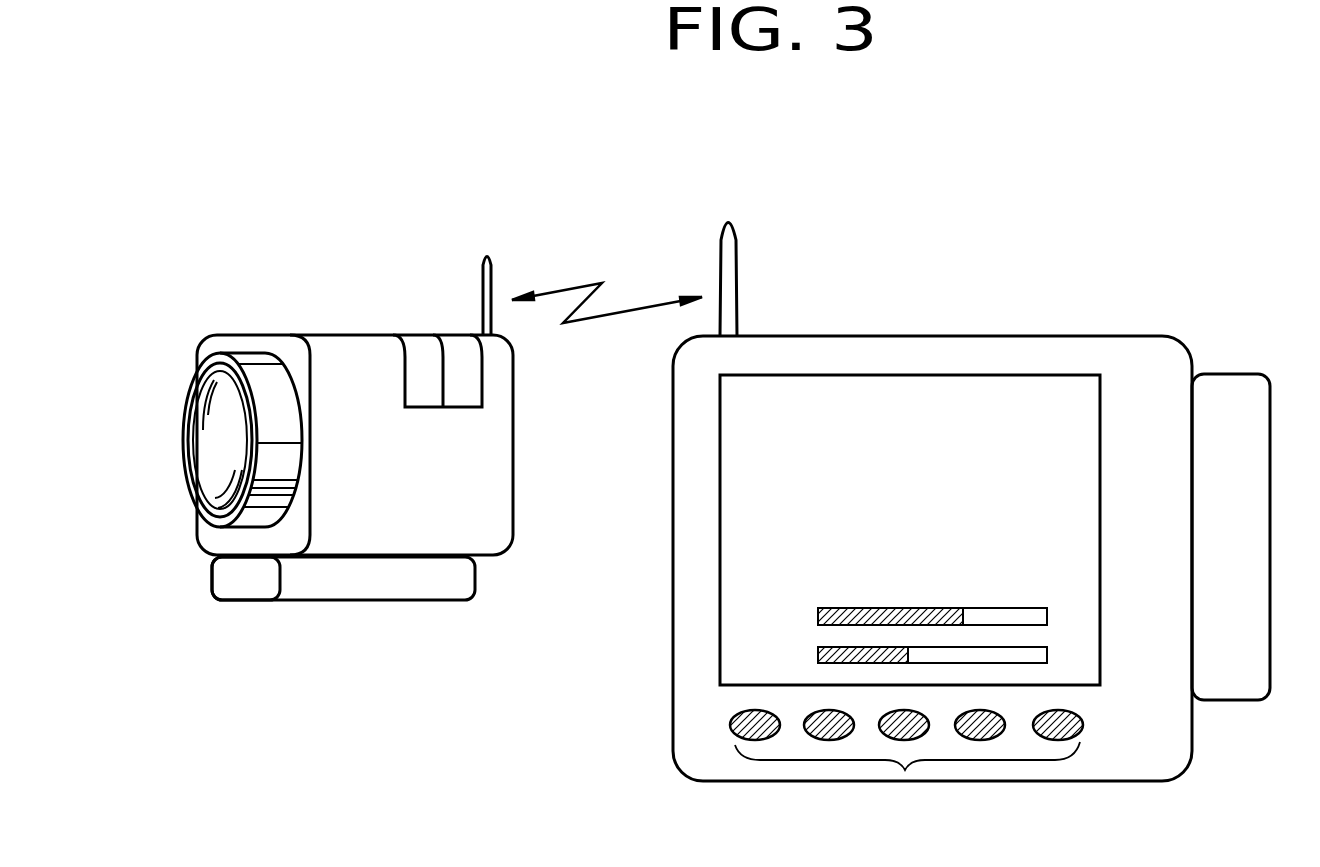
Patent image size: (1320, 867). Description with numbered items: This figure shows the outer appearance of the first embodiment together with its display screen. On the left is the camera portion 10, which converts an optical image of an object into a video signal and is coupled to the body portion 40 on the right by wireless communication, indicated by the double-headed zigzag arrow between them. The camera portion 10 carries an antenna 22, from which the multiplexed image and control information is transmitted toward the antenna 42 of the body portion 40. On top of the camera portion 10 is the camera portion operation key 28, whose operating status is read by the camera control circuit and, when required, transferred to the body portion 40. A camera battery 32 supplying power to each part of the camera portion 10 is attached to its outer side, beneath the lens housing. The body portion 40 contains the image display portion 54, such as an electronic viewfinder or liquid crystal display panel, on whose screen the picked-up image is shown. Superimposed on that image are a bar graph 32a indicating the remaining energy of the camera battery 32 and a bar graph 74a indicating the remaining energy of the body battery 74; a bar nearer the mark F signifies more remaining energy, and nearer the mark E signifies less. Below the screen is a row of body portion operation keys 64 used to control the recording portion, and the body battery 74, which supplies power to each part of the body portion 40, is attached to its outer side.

The camera portion 10 is at (349, 205).
The antenna 22 is at (482, 280).
The camera portion operation key 28 is at (422, 312).
The camera battery 32 is at (385, 583).
The bar graph 32a is at (722, 620).
The body portion 40 is at (953, 192).
The antenna 42 is at (737, 248).
The image display portion 54 is at (1047, 388).
The body portion operation key 64 is at (905, 772).
The body battery 74 is at (1230, 393).
The bar graph 74a is at (722, 658).